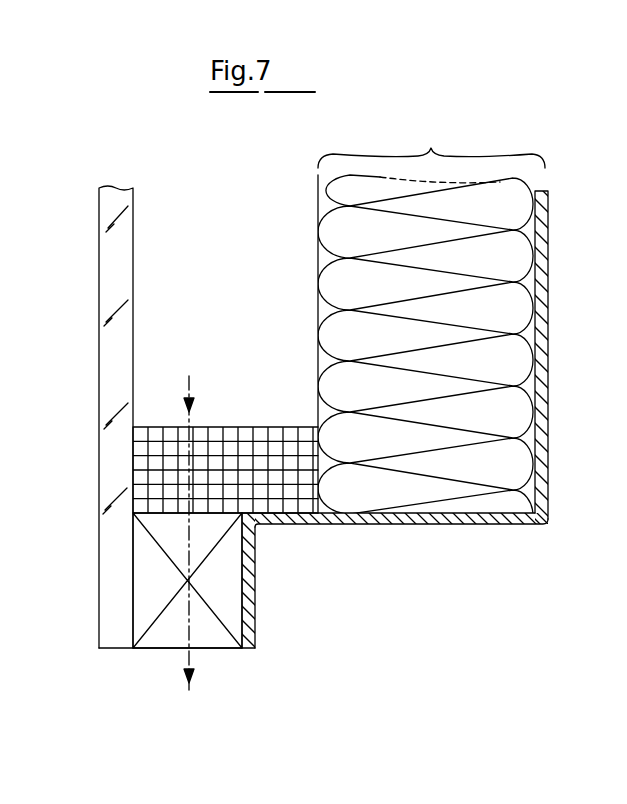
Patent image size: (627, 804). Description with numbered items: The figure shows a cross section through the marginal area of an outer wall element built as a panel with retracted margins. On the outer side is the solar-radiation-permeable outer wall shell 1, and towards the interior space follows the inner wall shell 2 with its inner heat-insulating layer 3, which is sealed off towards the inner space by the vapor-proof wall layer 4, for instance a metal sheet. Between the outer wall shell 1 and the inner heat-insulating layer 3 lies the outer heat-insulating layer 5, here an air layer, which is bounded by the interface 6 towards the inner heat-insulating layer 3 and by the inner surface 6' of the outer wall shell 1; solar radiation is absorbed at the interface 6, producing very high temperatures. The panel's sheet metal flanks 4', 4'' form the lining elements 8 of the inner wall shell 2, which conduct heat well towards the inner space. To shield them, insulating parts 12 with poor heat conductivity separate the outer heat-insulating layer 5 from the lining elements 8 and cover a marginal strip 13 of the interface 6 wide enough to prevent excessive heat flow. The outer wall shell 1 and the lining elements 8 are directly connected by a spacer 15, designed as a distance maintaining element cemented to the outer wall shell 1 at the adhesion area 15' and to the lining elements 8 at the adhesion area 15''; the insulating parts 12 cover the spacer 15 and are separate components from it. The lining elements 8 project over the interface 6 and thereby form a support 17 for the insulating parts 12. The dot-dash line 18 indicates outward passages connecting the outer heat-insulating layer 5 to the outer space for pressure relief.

The outer wall shell 1 is at (123, 190).
The inner wall shell 2 is at (431, 146).
The inner heat-insulating layer 3 is at (390, 350).
The wall layer 4 is at (409, 357).
The sheet metal flank 4' is at (398, 547).
The sheet metal flank 4'' is at (251, 580).
The outer heat-insulating layer 5 is at (238, 330).
The interface 6 is at (280, 344).
The inner surface of the outer wall shell 6' is at (177, 284).
The lining elements 8 is at (364, 525).
The insulating parts 12 is at (243, 460).
The marginal strip 13 is at (324, 460).
The spacers 15 is at (207, 595).
The adhesion area 15' is at (83, 592).
The adhesion area 15'' is at (299, 576).
The support 17 is at (284, 512).
The dot-dash line 18 is at (191, 624).